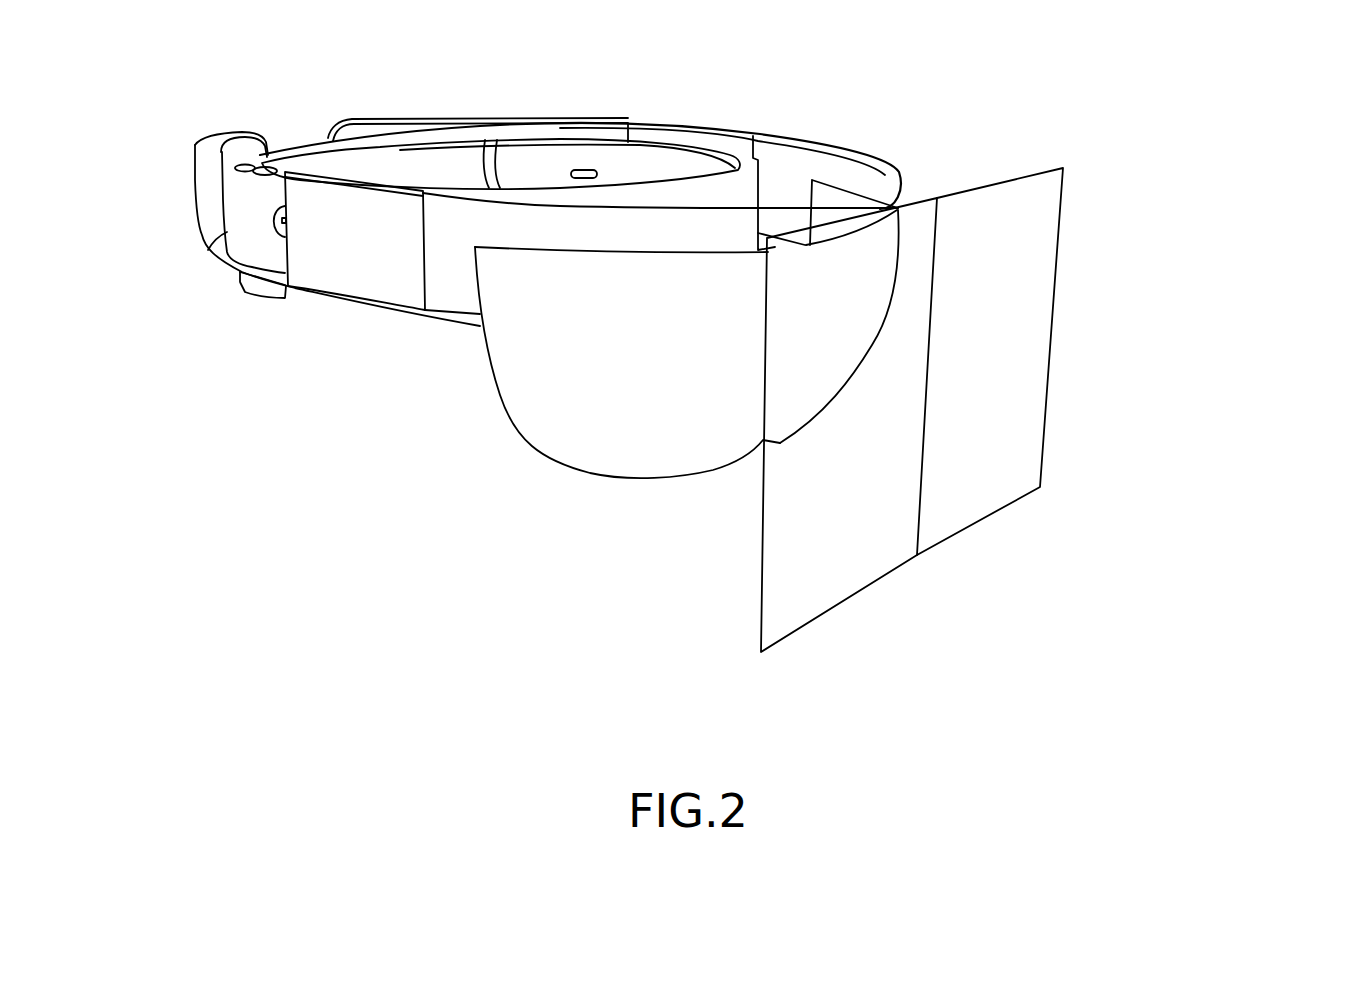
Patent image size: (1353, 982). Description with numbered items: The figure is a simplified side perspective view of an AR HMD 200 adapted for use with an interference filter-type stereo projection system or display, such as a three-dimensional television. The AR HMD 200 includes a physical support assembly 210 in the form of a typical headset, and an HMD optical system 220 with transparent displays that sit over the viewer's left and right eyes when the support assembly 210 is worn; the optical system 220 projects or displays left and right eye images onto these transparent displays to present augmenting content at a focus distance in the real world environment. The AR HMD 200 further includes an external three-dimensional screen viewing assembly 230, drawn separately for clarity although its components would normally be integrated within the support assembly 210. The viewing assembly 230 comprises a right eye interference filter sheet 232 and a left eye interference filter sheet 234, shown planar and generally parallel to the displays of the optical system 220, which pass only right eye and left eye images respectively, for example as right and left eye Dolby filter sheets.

The AR HMD 200 is at (203, 377).
The physical support assembly 210 is at (671, 108).
The HMD optical system 220 is at (500, 422).
The external 3D screen viewing assembly 230 is at (1077, 488).
The right eye interference filter sheet 232 is at (761, 650).
The left eye interference filter sheet 234 is at (1063, 168).